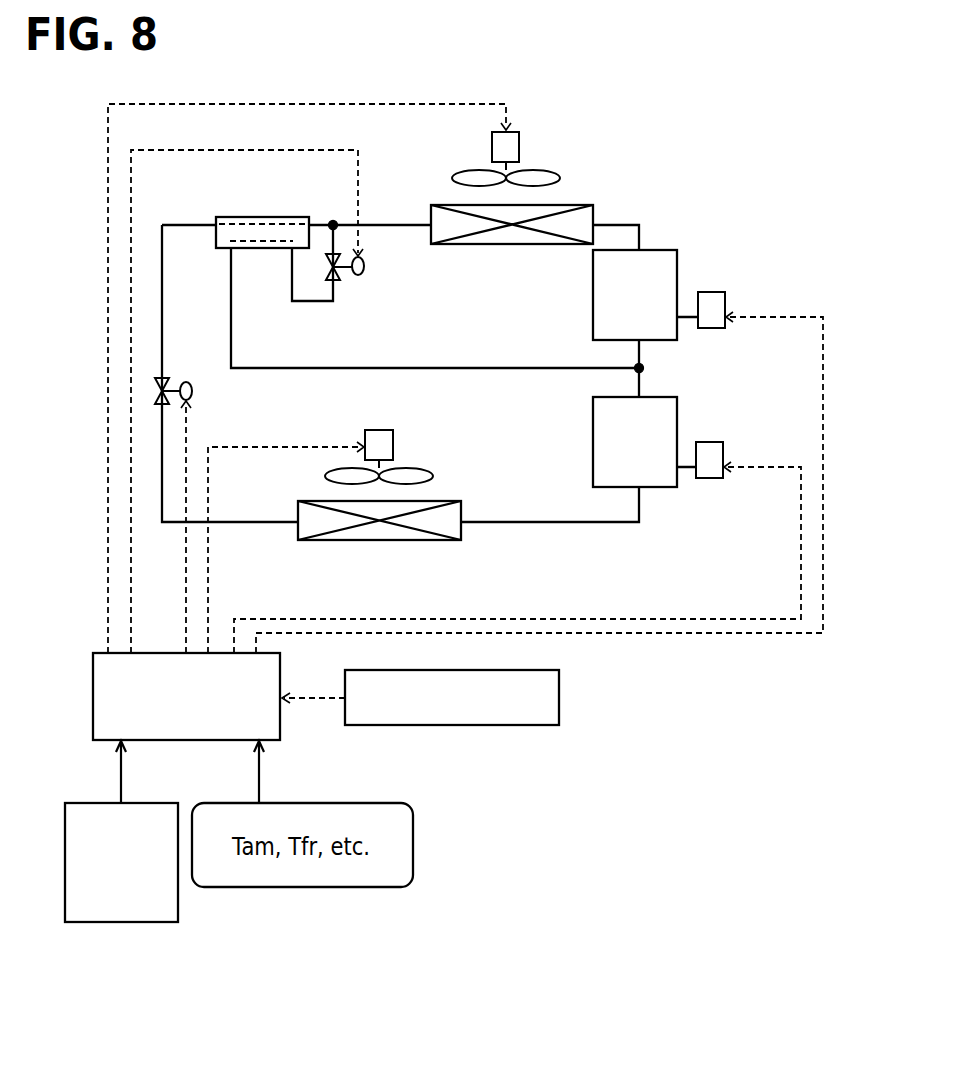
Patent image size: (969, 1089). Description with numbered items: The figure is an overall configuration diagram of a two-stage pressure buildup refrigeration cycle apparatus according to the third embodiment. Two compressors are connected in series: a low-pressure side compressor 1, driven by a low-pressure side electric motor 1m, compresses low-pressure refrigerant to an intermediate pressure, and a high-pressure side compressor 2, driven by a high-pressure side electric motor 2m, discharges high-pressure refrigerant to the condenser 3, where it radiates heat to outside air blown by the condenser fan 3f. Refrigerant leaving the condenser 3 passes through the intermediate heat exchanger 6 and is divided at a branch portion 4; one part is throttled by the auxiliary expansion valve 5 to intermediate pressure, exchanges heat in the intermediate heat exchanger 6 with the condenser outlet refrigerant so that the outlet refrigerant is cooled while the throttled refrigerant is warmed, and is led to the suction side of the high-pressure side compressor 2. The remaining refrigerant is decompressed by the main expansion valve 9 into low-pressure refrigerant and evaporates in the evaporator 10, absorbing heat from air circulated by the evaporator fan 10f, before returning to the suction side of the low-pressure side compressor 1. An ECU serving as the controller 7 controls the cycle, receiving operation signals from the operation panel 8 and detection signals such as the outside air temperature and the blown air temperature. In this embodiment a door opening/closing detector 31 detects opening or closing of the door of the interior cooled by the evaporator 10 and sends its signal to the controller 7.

The low-pressure side compressor 1 is at (655, 405).
The low-pressure side electric motor 1m is at (723, 448).
The high-pressure side compressor 2 is at (655, 253).
The high-pressure side electric motor 2m is at (725, 298).
The condenser 3 is at (562, 207).
The condenser fan 3f is at (519, 144).
The branch portion 4 is at (333, 220).
The auxiliary expansion valve 5 is at (336, 282).
The intermediate heat exchanger 6 is at (262, 217).
The controller 7 is at (98, 742).
The operation panel 8 is at (488, 727).
The main expansion valve 9 is at (162, 372).
The evaporator 10 is at (373, 532).
The evaporator fan 10f is at (393, 441).
The door opening/closing detector 31 is at (120, 924).